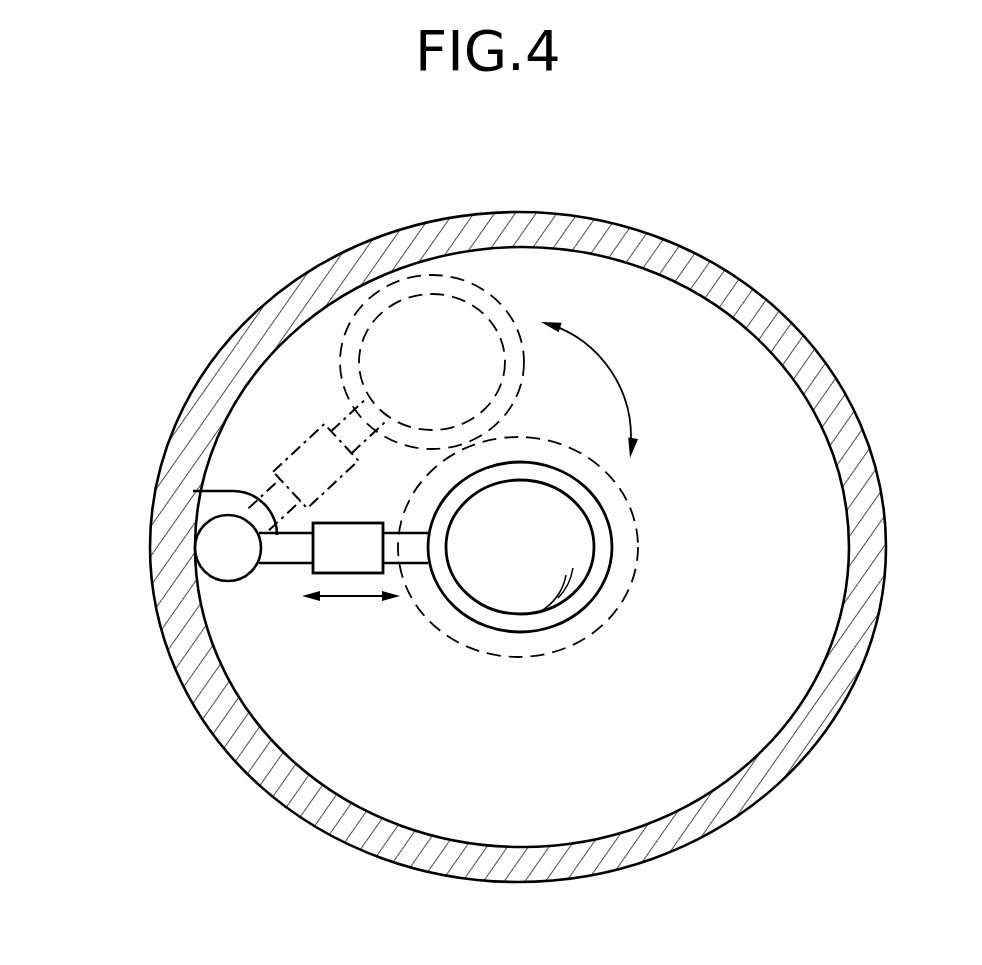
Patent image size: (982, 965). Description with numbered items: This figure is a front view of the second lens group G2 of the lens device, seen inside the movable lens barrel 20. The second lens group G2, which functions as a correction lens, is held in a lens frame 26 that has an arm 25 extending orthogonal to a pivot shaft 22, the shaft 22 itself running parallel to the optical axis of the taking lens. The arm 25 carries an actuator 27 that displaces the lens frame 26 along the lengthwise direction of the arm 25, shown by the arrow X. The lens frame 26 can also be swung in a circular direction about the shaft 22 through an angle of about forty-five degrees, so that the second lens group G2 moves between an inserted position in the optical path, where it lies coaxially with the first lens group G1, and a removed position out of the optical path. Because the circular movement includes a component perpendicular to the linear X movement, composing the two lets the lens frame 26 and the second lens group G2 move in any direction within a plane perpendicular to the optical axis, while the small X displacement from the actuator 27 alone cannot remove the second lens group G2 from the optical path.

The movable lens barrel 20 is at (188, 653).
The pivot shaft 22 is at (218, 545).
The arm 25 is at (193, 492).
The lens frame 26 is at (474, 632).
The actuator 27 is at (323, 548).
The first lens group G1 is at (596, 655).
The second lens group G2 is at (407, 323).
The lengthwise direction of the arm X is at (351, 619).